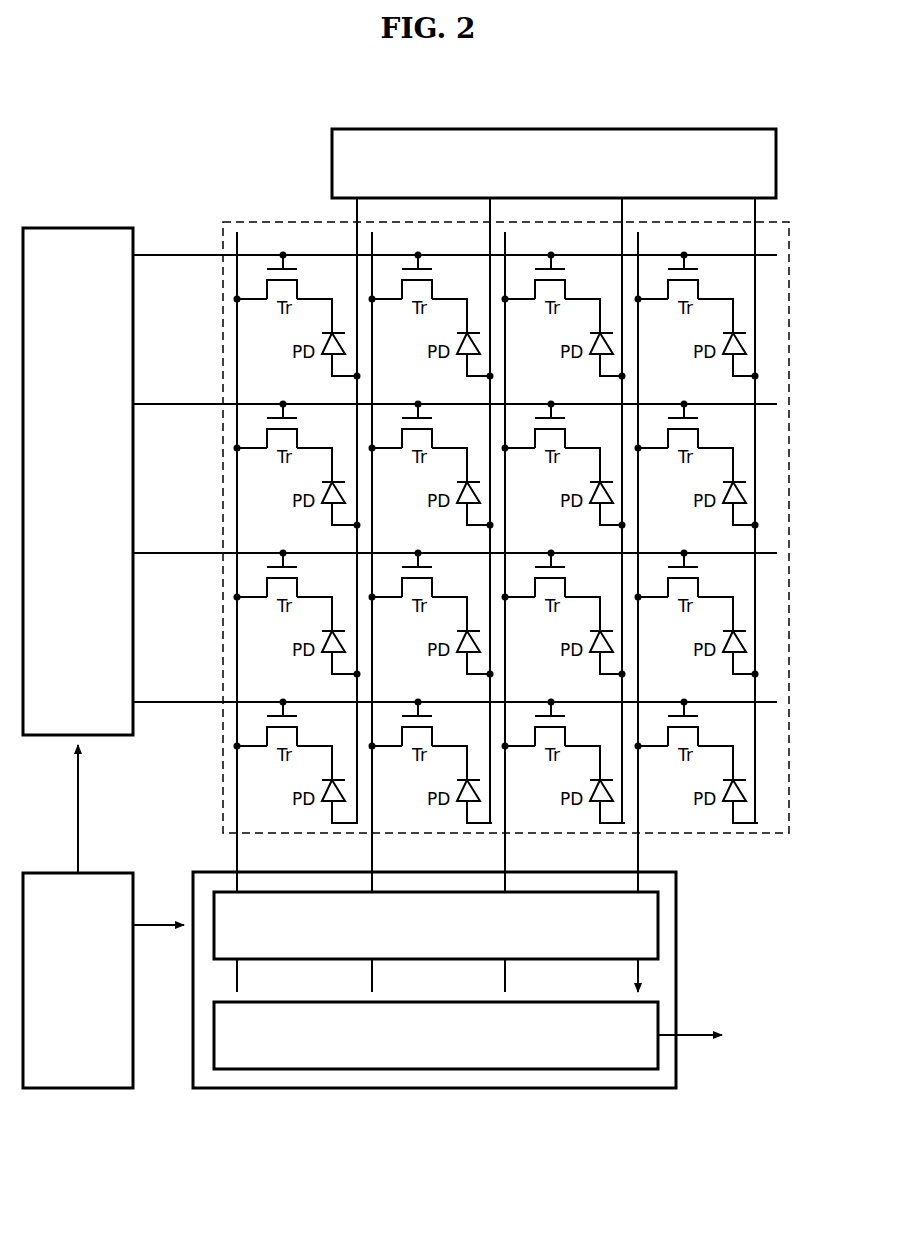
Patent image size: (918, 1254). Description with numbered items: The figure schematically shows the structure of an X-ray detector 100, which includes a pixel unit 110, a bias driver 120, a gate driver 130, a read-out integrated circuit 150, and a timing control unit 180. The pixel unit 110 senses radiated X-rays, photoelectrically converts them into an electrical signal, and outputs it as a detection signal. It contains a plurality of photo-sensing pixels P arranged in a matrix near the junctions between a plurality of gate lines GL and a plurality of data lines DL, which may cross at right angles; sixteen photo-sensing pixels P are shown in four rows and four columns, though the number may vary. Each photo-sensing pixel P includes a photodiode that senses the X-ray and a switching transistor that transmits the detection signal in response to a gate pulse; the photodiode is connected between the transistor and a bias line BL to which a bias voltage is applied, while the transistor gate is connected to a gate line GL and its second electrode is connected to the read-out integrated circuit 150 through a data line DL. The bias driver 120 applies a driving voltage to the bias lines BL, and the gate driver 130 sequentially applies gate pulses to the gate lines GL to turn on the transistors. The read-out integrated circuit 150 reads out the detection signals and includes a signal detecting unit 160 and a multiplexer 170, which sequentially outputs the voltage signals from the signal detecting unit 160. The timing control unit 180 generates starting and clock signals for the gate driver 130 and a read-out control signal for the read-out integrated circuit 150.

The X-ray detector 100 is at (736, 100).
The pixel unit 110 is at (256, 212).
The bias driver 120 is at (560, 129).
The gate driver 130 is at (80, 228).
The read-out integrated circuit 150 is at (676, 882).
The signal detecting unit 160 is at (658, 925).
The multiplexer 170 is at (658, 1020).
The timing control unit 180 is at (82, 1088).
The gate line GL is at (326, 248).
The bias line BL is at (764, 238).
The data line DL is at (230, 825).
The photo-sensing pixel P is at (264, 340).